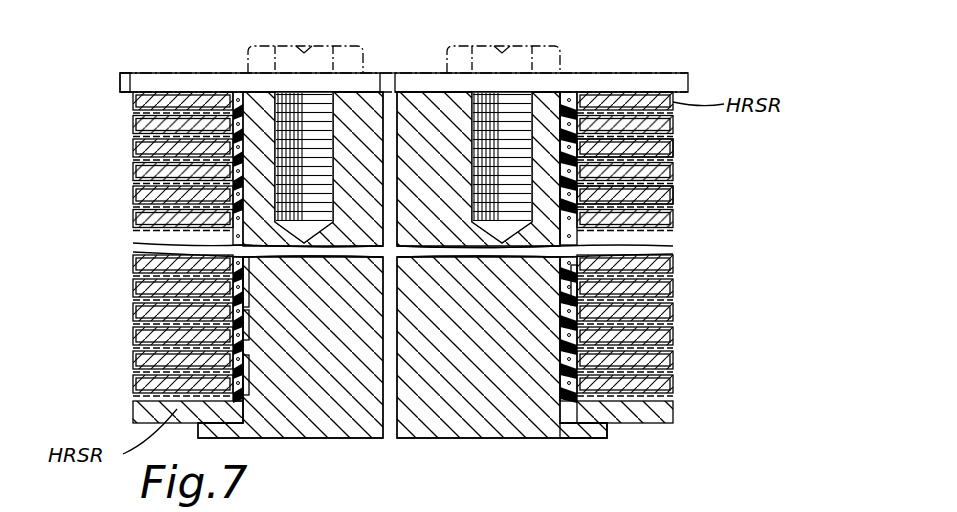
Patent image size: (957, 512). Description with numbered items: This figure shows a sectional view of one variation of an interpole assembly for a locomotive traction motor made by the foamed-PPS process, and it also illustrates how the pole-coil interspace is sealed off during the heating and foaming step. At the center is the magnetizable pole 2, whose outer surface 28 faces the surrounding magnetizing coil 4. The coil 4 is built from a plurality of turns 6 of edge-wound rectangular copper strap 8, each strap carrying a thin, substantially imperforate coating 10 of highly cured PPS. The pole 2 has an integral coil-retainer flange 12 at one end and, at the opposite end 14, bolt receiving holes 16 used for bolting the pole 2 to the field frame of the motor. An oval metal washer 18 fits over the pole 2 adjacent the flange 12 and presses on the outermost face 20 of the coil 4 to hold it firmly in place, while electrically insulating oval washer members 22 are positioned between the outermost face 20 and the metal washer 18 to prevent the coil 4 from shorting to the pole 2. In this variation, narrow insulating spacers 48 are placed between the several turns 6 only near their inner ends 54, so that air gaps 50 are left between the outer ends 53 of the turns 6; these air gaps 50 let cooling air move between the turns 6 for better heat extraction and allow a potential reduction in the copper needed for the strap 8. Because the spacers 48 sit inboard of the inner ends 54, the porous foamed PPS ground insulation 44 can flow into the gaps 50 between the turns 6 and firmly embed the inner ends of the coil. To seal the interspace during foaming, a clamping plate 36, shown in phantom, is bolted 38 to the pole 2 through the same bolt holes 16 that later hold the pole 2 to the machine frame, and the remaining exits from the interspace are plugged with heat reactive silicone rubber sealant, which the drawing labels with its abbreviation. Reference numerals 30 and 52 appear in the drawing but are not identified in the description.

The magnetizable pole 2 is at (292, 441).
The magnetizing coil 4 is at (686, 318).
The turns 6 is at (673, 387).
The edge-wound rectangular copper strap 8 is at (673, 165).
The coating 10 is at (675, 206).
The coil-retainer flange 12 is at (578, 436).
The opposite end 14 is at (545, 92).
The bolt receiving holes 16 is at (322, 106).
The oval metal washer 18 is at (668, 418).
The outermost face 20 is at (652, 432).
The electrically insulating oval washer members 22 is at (135, 402).
The outer surface 28 is at (578, 372).
The top plate end 30 is at (240, 93).
The clamping plate 36 is at (668, 83).
The bolting 38 is at (448, 61).
The foamed PPS ground insulation 44 is at (245, 328).
The narrow insulating spacers 48 is at (135, 335).
The air gaps 50 is at (133, 121).
The braze joint 52 is at (244, 271).
The outer ends 53 is at (133, 262).
The inner ends 54 is at (245, 364).